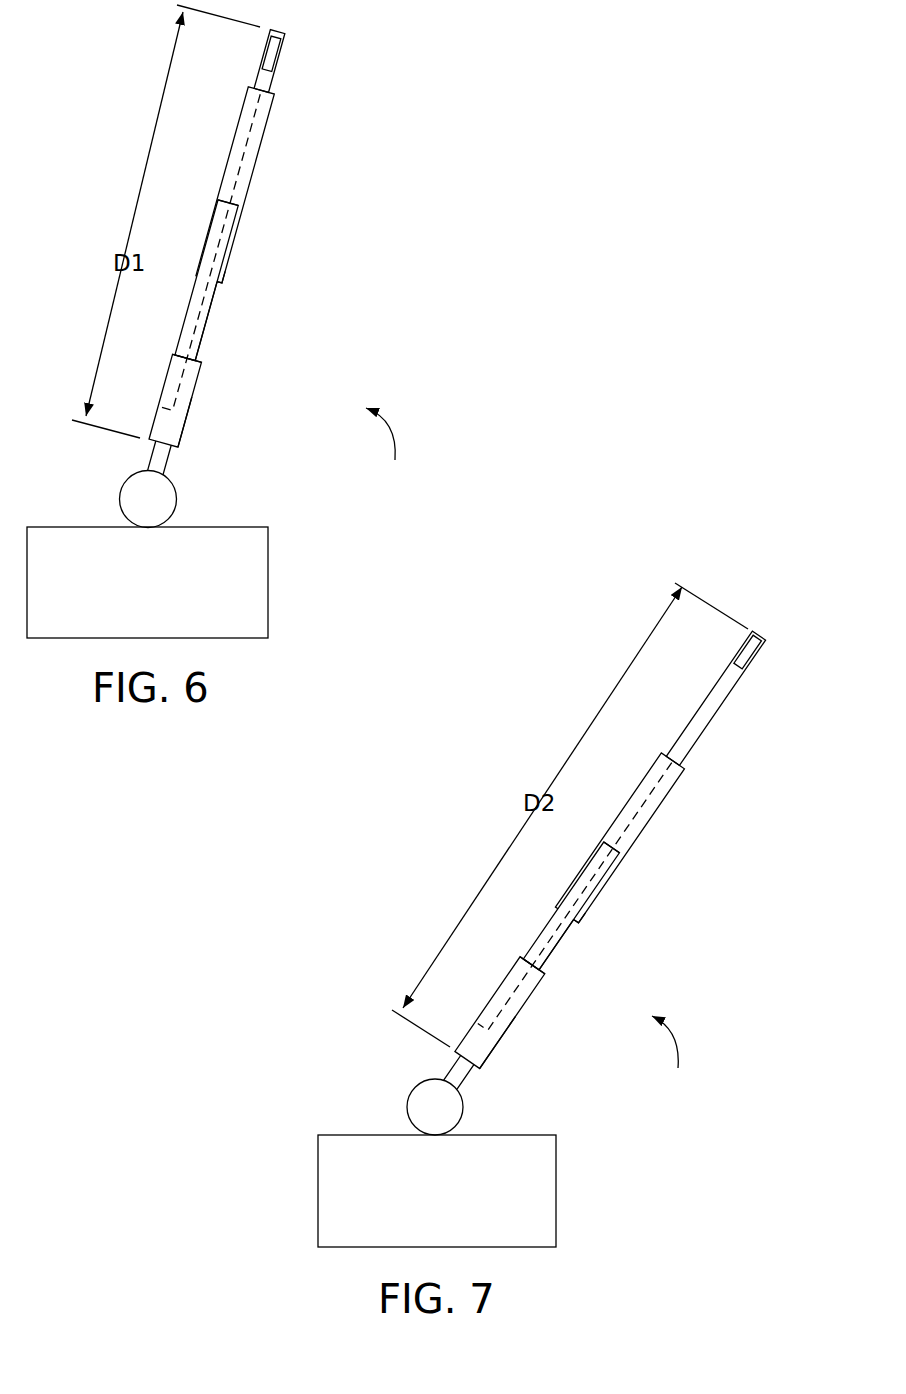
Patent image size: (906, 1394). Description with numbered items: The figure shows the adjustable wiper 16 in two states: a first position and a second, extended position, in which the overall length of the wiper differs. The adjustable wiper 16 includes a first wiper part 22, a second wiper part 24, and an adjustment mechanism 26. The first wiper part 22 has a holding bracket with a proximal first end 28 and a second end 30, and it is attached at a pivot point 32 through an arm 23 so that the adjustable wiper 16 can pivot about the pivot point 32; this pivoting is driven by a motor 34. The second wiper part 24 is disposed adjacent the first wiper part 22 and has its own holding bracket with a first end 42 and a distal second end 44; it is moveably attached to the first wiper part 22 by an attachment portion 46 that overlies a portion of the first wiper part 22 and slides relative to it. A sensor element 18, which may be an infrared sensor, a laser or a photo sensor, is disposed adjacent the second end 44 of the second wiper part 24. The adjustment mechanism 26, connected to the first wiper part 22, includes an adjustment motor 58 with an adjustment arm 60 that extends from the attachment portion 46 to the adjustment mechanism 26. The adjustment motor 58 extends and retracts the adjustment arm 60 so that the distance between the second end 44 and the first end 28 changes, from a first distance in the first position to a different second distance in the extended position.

In FIG. 6, the adjustable wiper 16 is at (389, 449).
In FIG. 7, the adjustable wiper 16 is at (674, 1056).
In FIG. 6, the sensor element 18 is at (273, 55).
In FIG. 7, the sensor element 18 is at (748, 660).
In FIG. 6, the first wiper part 22 is at (185, 327).
In FIG. 7, the first wiper part 22 is at (538, 938).
In FIG. 6, the arm 23 is at (168, 462).
In FIG. 7, the arm 23 is at (455, 1068).
In FIG. 6, the second wiper part 24 is at (262, 143).
In FIG. 7, the second wiper part 24 is at (663, 807).
In FIG. 6, the adjustment mechanism 26 is at (192, 417).
In FIG. 7, the adjustment mechanism 26 is at (500, 1048).
In FIG. 6, the first end 28 is at (165, 392).
In FIG. 7, the first end 28 is at (490, 1002).
In FIG. 6, the second end 30 is at (218, 207).
In FIG. 7, the second end 30 is at (604, 848).
In FIG. 6, the pivot point 32 is at (120, 490).
In FIG. 7, the pivot point 32 is at (408, 1098).
In FIG. 6, the motor 34 is at (268, 580).
In FIG. 7, the motor 34 is at (556, 1192).
In FIG. 6, the first end 42 is at (222, 284).
In FIG. 7, the first end 42 is at (580, 924).
In FIG. 6, the second end 44 is at (279, 32).
In FIG. 7, the second end 44 is at (758, 634).
In FIG. 6, the attachment portion 46 is at (242, 177).
In FIG. 7, the attachment portion 46 is at (637, 828).
In FIG. 6, the adjustment motor 58 is at (198, 382).
In FIG. 7, the adjustment motor 58 is at (535, 1000).
In FIG. 6, the adjustment arm 60 is at (202, 328).
In FIG. 7, the adjustment arm 60 is at (557, 945).